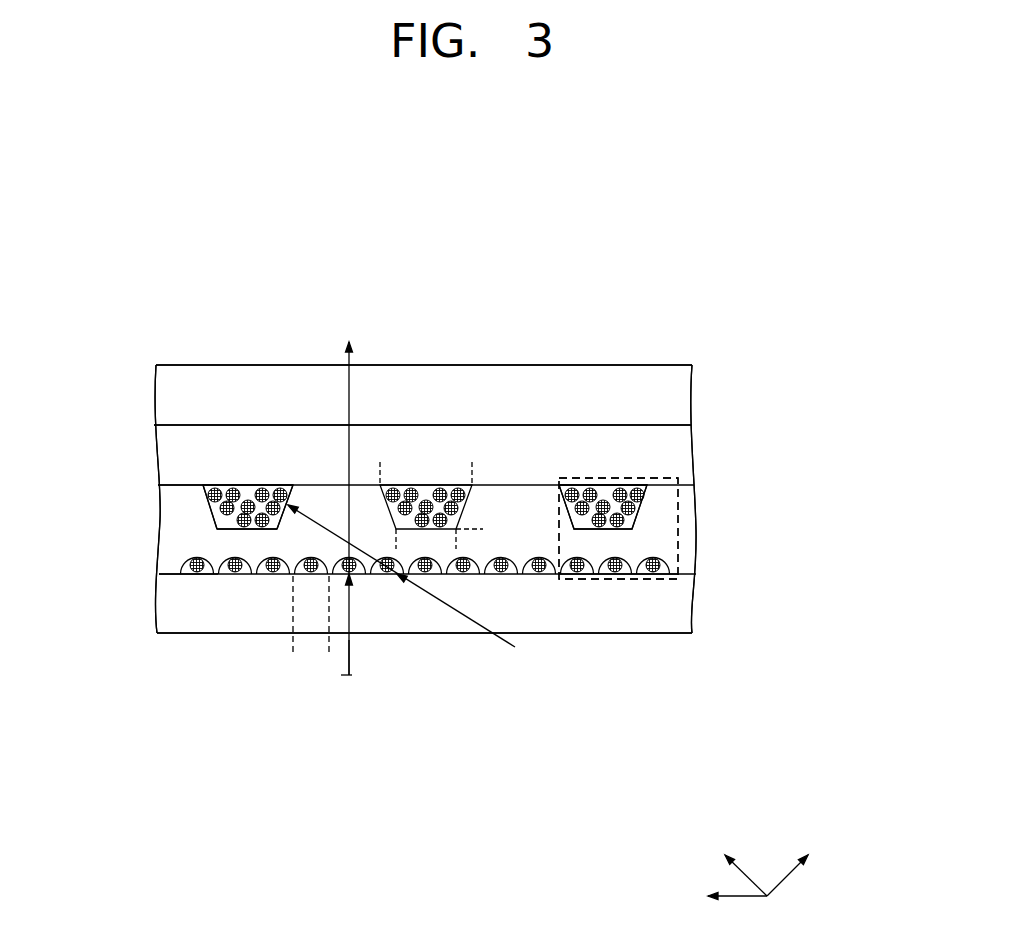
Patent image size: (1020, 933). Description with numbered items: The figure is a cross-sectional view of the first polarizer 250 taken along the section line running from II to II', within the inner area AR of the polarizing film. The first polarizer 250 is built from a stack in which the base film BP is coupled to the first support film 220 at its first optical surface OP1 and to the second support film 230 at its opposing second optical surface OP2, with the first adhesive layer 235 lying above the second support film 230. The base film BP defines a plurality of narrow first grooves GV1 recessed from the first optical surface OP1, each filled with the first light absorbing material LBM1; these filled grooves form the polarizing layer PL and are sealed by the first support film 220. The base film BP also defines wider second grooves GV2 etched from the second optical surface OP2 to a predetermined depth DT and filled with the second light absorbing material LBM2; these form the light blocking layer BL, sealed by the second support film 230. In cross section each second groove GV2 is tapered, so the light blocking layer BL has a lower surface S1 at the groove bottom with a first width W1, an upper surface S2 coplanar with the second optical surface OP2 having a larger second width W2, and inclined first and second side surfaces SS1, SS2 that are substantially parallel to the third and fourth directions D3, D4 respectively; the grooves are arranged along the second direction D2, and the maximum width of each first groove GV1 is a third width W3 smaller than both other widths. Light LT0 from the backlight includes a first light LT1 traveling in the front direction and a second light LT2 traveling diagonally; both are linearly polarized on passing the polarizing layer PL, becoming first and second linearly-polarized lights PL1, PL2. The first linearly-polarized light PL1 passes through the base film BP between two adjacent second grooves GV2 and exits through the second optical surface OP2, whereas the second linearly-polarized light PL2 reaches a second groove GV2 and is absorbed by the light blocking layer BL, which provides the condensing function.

The first polarizer 250 is at (658, 267).
The first adhesive layer 235 is at (682, 395).
The second support film 230 is at (682, 450).
The first support film 220 is at (682, 600).
The second light absorbing material LBM2 is at (640, 490).
The first light absorbing material LBM1 is at (615, 577).
The second groove GV2 is at (573, 513).
The first groove GV1 is at (192, 576).
The inner area AR is at (627, 483).
The base film BP is at (683, 552).
The light blocking layer BL is at (800, 480).
The polarizing layer PL is at (583, 725).
The first linearly-polarized light PL1 is at (349, 388).
The second linearly-polarized light PL2 is at (337, 554).
The first side surface SS1 is at (207, 496).
The second side surface SS2 is at (289, 497).
The lower surface S1 is at (222, 529).
The upper surface S2 is at (222, 485).
The first optical surface OP1 is at (172, 574).
The second optical surface OP2 is at (178, 485).
The first width W1 is at (456, 545).
The second width W2 is at (472, 466).
The third width W3 is at (293, 660).
The depth DT is at (476, 485).
The light LT0 is at (345, 725).
The first light LT1 is at (350, 648).
The second light LT2 is at (473, 622).
The section line start II is at (154, 515).
The section line end II' is at (698, 515).
The second direction D2 is at (721, 897).
The third direction D3 is at (739, 862).
The fourth direction D4 is at (794, 862).